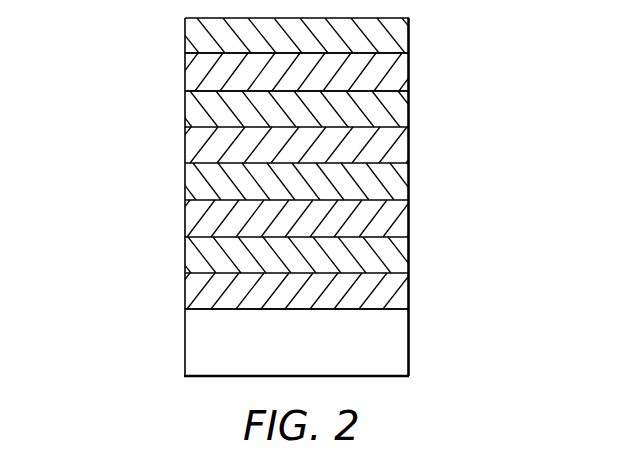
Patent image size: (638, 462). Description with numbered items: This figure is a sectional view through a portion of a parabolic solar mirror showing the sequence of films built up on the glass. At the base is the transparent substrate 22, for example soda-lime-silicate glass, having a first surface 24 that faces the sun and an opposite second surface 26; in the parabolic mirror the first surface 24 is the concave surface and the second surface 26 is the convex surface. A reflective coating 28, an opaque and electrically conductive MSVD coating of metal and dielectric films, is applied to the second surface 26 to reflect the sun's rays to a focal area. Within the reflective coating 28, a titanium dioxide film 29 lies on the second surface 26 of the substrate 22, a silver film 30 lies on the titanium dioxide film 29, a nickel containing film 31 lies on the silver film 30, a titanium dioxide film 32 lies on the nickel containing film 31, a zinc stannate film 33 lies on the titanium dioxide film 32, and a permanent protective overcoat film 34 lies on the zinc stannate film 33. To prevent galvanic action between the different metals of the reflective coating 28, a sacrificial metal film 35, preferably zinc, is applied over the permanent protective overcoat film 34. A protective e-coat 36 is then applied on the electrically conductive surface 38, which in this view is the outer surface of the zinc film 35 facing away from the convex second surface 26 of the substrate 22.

The transparent substrate 22 is at (399, 347).
The first surface 24 is at (385, 377).
The second surface 26 is at (215, 309).
The reflective coating 28 is at (483, 92).
The titanium dioxide film 29 is at (399, 292).
The silver film 30 is at (399, 260).
The nickel containing film 31 is at (399, 220).
The titanium dioxide film 32 is at (399, 184).
The zinc stannate film 33 is at (399, 148).
The permanent protective overcoat film 34 is at (399, 108).
The sacrificial metal film 35 is at (411, 76).
The protective e-coat 36 is at (411, 37).
The electrically conductive surface 38 is at (210, 91).